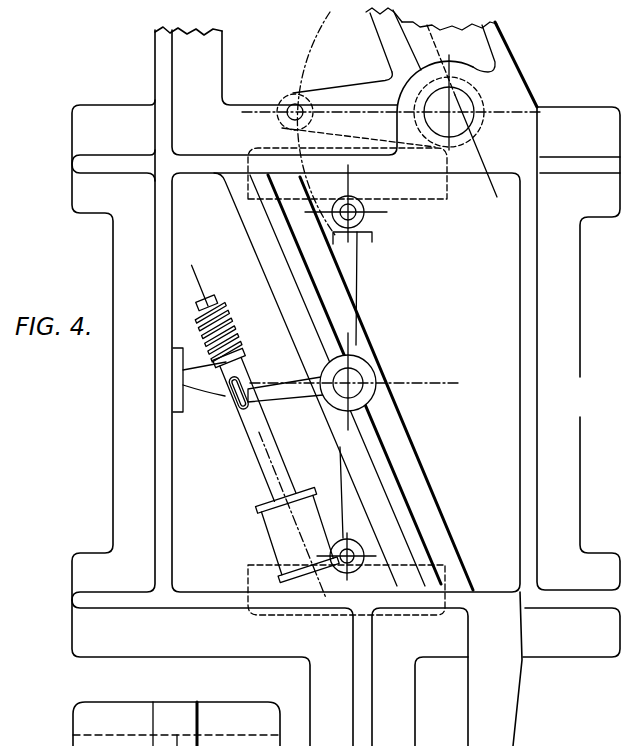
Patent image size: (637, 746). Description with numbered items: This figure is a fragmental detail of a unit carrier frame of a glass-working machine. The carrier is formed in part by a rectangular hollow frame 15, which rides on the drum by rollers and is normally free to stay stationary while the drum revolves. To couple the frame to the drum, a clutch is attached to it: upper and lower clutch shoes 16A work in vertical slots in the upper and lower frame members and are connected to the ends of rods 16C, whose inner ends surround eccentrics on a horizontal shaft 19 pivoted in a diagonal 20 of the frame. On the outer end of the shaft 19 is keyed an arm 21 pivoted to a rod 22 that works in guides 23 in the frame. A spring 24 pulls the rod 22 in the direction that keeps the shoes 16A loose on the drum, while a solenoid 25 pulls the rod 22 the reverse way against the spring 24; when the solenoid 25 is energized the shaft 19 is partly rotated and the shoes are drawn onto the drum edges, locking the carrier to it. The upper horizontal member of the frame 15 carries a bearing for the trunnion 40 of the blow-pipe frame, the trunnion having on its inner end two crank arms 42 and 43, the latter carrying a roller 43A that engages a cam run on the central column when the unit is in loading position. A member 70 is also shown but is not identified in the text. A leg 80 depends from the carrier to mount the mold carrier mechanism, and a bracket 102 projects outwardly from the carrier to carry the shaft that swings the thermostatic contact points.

The rectangular hollow frame 15 is at (553, 562).
The clutch shoes 16A is at (427, 190).
The rods 16C is at (352, 268).
The horizontal shaft 19 is at (355, 386).
The diagonal 20 is at (343, 327).
The arm 21 is at (272, 390).
The rod 22 is at (257, 452).
The guides 23 is at (217, 370).
The spring 24 is at (208, 325).
The solenoid 25 is at (290, 541).
The trunnion 40 is at (462, 100).
The crank arm 42 is at (392, 42).
The crank arm 43 is at (330, 99).
The roller 43A is at (293, 102).
The support member 70 is at (500, 47).
The leg 80 is at (397, 738).
The bracket 102 is at (500, 723).